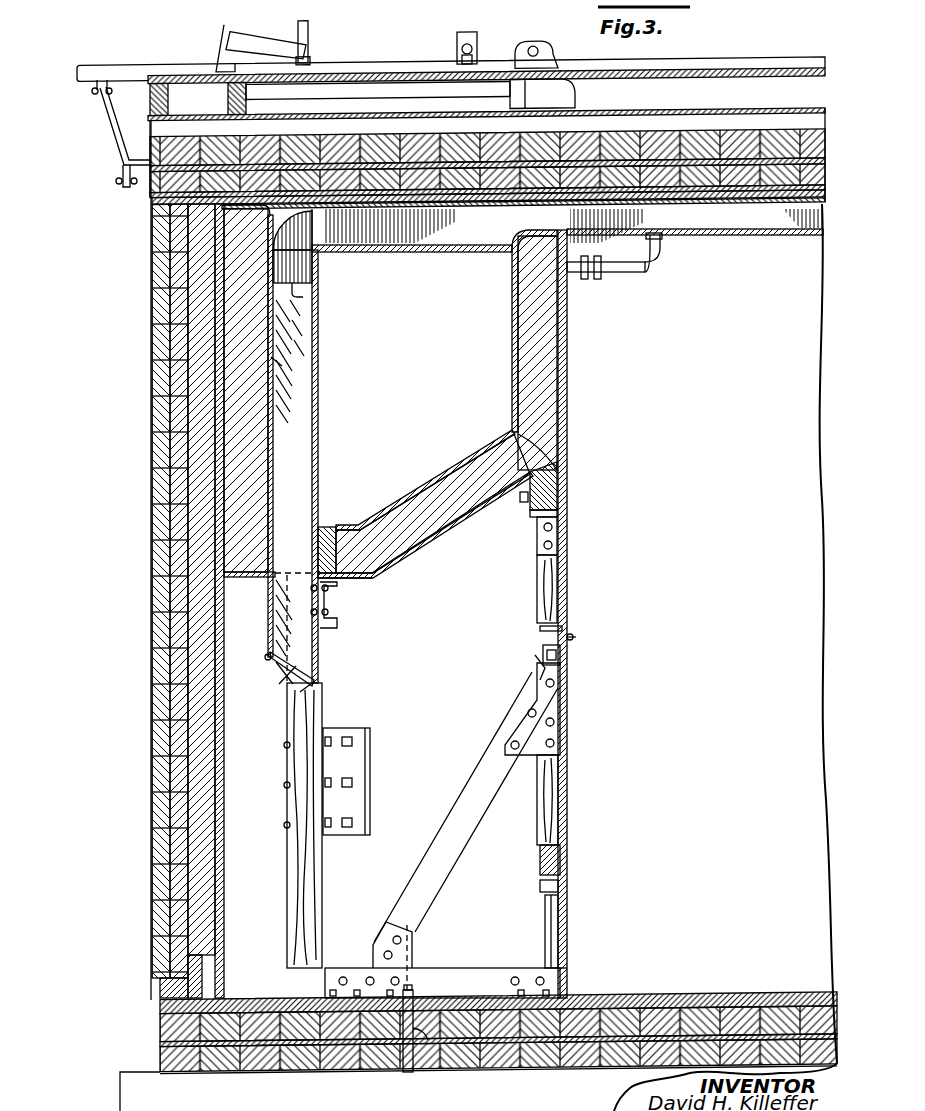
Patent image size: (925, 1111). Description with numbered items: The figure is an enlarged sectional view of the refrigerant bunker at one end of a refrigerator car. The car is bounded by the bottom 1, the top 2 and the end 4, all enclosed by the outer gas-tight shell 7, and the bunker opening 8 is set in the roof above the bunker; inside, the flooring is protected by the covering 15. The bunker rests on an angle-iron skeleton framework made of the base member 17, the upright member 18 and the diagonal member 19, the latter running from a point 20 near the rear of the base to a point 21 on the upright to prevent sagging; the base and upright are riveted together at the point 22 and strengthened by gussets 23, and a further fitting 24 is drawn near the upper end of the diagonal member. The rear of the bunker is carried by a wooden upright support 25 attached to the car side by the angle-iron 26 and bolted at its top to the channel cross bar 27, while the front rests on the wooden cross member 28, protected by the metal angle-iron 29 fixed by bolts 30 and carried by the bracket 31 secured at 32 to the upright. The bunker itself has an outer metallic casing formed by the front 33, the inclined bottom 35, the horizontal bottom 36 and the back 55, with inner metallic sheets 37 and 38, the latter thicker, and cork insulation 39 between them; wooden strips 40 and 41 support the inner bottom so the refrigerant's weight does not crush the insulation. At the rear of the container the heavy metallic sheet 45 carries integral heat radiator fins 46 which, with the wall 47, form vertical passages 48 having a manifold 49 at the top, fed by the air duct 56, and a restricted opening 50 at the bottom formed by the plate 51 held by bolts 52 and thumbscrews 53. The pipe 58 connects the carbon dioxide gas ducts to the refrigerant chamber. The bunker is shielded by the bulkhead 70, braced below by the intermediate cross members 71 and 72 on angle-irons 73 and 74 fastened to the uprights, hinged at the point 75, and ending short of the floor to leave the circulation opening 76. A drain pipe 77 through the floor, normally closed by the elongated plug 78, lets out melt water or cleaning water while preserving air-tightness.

The bottom 1 is at (526, 1070).
The top 2 is at (626, 138).
The end 4 is at (160, 593).
The outer gas-tight shell 7 is at (152, 341).
The bunker opening 8 is at (369, 96).
The covering 15 is at (720, 996).
The base member 17 is at (478, 961).
The upright member 18 is at (540, 827).
The diagonal member 19 is at (446, 816).
The point near rear end of base member 20 is at (351, 961).
The point in upright member 21 is at (535, 683).
The fastening point 22 is at (566, 976).
The gusset 23 is at (526, 761).
The hook 24 is at (535, 661).
The upright support 25 is at (323, 891).
The angle-iron 26 is at (361, 771).
The channel cross bar 27 is at (338, 624).
The cross member 28 is at (554, 481).
The metal angle-iron 29 is at (531, 515).
The bolt 30 is at (522, 501).
The bracket 31 is at (558, 534).
The bracket fastening 32 is at (558, 549).
The front of outer casing 33 is at (566, 336).
The inclined bottom 35 is at (446, 531).
The horizontal bottom 36 is at (356, 579).
The inner metallic sheet 37 is at (515, 336).
The inner metallic sheet 38 is at (429, 483).
The cork insulation 39 is at (552, 396).
The wooden strip 40 is at (334, 527).
The wooden strip 41 is at (518, 444).
The heavy metallic sheet 45 is at (318, 342).
The heat radiator fin 46 is at (301, 292).
The wall 47 is at (272, 360).
The vertical passage 48 is at (300, 411).
The manifold 49 is at (296, 270).
The restricted opening 50 is at (306, 693).
The plate 51 is at (266, 660).
The bolt 52 is at (300, 663).
The thumbscrew 53 is at (280, 676).
The back of outer casing 55 is at (246, 494).
The air duct 56 is at (479, 241).
The pipe 58 is at (620, 273).
The bulkhead 70 is at (570, 604).
The intermediate cross member 71 is at (566, 630).
The intermediate cross member 72 is at (561, 863).
The angle-iron 73 is at (561, 658).
The angle-iron 74 is at (559, 889).
The hinge point 75 is at (573, 638).
The opening 76 is at (566, 926).
The drain pipe 77 is at (408, 1062).
The elongated plug 78 is at (420, 1032).